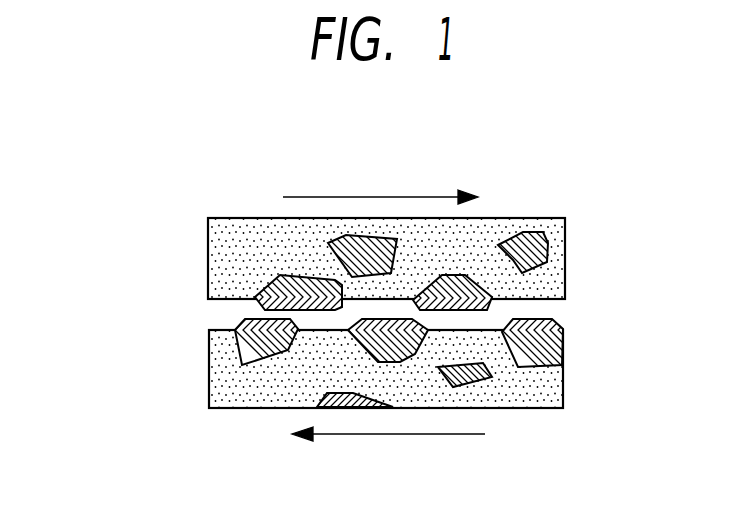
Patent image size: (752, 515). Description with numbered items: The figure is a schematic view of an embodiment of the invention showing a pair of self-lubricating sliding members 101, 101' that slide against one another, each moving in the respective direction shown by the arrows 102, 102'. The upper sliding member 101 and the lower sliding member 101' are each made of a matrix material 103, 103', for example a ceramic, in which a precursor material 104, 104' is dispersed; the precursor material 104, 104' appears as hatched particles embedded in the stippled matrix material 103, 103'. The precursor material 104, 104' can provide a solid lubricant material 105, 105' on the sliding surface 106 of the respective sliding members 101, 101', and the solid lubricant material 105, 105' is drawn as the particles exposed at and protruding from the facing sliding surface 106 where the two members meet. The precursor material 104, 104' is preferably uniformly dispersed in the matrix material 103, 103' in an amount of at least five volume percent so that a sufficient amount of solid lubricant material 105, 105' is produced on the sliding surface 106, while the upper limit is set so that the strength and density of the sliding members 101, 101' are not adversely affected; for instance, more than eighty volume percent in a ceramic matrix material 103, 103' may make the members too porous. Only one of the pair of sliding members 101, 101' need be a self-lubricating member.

The sliding member 101 is at (309, 270).
The sliding member 101' is at (310, 352).
The arrow 102 is at (380, 166).
The arrow 102' is at (388, 461).
The matrix material 103 is at (427, 258).
The matrix material 103' is at (434, 377).
The precursor material 104 is at (520, 211).
The precursor material 104' is at (591, 339).
The solid lubricant material 105 is at (229, 297).
The solid lubricant material 105' is at (239, 330).
The sliding surface 106 is at (550, 299).